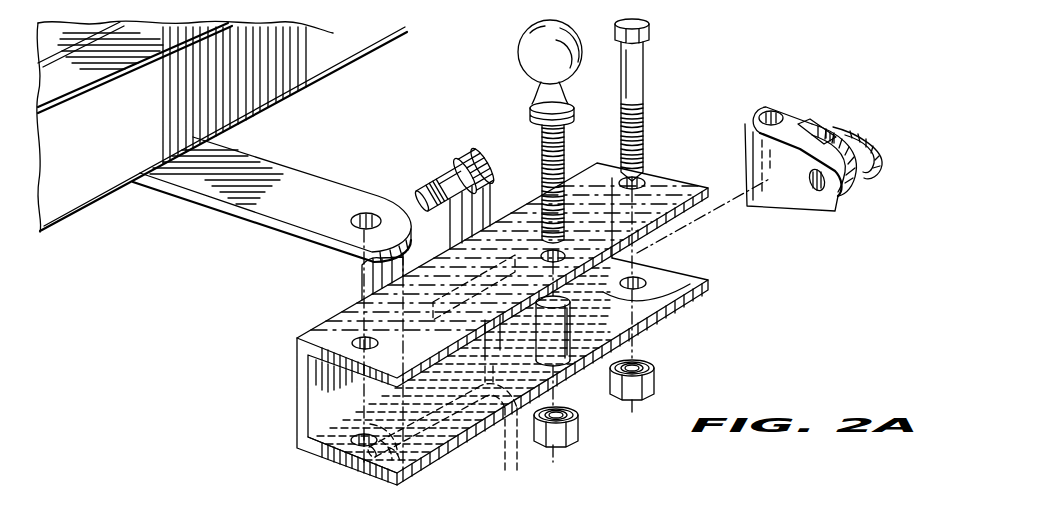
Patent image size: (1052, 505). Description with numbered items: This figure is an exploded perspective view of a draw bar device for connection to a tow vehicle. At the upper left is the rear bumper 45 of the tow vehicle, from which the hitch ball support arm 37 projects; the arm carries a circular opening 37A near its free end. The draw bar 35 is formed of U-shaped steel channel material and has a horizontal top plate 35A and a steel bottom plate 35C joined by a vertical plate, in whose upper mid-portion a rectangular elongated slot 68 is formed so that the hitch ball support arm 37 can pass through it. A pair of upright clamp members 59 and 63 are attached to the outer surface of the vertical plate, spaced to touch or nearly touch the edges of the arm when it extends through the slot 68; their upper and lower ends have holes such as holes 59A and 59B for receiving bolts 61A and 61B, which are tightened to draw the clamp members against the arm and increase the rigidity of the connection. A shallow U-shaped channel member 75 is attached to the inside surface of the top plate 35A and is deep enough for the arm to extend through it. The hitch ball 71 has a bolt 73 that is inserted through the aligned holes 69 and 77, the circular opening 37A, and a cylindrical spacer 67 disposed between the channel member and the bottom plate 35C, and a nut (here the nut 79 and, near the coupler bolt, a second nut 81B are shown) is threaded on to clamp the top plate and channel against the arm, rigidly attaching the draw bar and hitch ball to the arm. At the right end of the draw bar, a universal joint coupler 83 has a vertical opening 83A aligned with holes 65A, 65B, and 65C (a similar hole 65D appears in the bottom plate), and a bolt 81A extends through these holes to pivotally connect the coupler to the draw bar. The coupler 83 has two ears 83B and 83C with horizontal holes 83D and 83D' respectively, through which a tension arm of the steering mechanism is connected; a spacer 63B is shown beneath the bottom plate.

The rear bumper 45 is at (332, 57).
The hitch ball support arm 37 is at (267, 163).
The circular opening 37A is at (356, 212).
The bolt 61A is at (440, 180).
The hole 59A is at (458, 155).
The upright clamp member 59 is at (446, 183).
The bolt 73 is at (541, 150).
The hitch ball 71 is at (517, 58).
The bolt 81A is at (645, 72).
The circular hole 65B is at (651, 162).
The horizontal top plate 35A is at (483, 261).
The vertical opening 83A is at (772, 111).
The ear 83C is at (820, 140).
The ear 83B is at (857, 127).
The horizontal hole 83D' is at (889, 147).
The horizontal hole 83D is at (842, 202).
The connecting element 83 is at (791, 174).
The circular hole 69 is at (562, 253).
The circular hole 65C is at (648, 279).
The circular hole 77 is at (690, 283).
The steel bottom plate 35C is at (713, 280).
The draw bar 35 is at (512, 310).
The cylindrical spacer 67 is at (628, 333).
The bolt 81B is at (655, 386).
The nut 79 is at (579, 440).
The hole 59B is at (450, 441).
The bolt 61B is at (450, 445).
The lower spacer 63B is at (417, 463).
The hole 65D is at (352, 440).
The hole 65A is at (350, 341).
The upright clamp member 63 is at (360, 282).
The rectangular elongated slot 68 is at (458, 293).
The shallow U-shaped channel member 75 is at (513, 335).